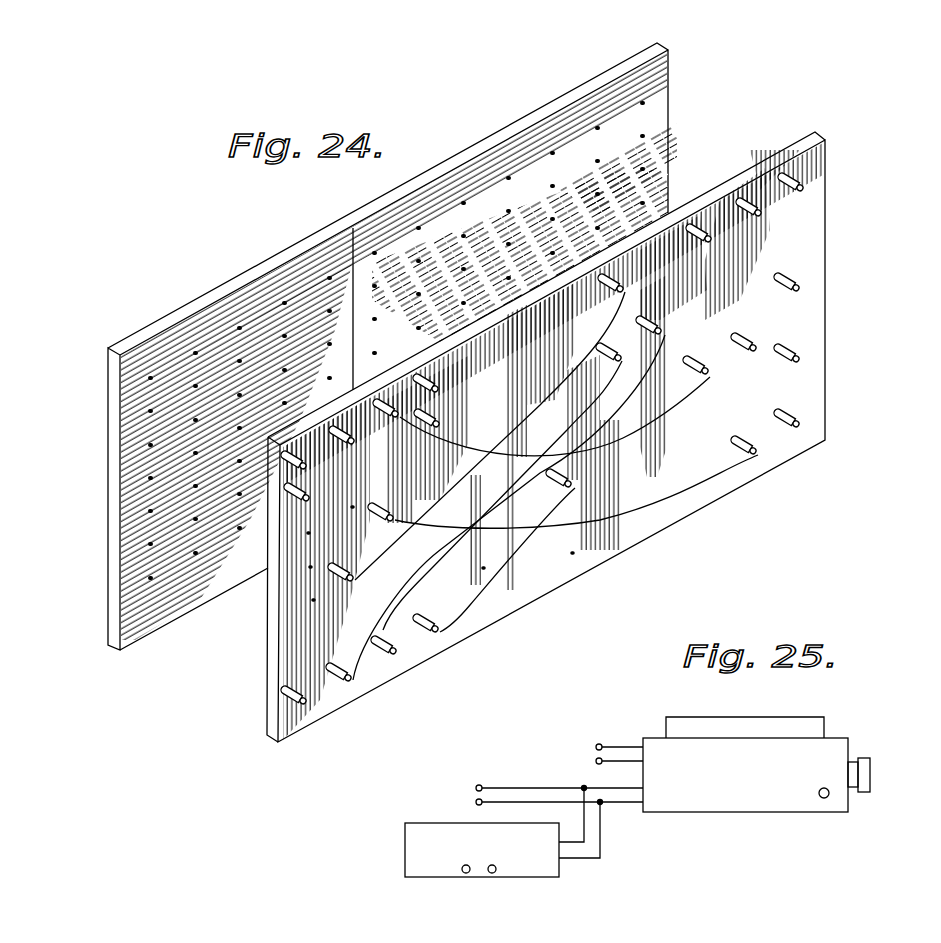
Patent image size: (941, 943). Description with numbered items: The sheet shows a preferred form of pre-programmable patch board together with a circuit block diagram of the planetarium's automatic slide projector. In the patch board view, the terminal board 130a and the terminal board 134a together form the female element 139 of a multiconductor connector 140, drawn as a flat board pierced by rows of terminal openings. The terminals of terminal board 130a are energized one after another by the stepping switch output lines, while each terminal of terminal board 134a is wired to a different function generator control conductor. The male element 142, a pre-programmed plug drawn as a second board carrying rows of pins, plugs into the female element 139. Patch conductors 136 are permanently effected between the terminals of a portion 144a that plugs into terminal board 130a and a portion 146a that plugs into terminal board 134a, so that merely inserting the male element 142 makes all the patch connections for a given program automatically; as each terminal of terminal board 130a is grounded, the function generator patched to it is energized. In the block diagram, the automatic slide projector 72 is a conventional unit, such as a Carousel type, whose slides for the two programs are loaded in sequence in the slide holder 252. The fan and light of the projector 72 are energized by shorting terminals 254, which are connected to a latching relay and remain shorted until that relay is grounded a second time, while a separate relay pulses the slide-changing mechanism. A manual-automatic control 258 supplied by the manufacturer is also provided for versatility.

In FIG. 24, the terminal board 130a is at (263, 283).
In FIG. 24, the terminal board 134a is at (508, 128).
In FIG. 24, the female element 139 is at (668, 82).
In FIG. 24, the male element 142 is at (813, 170).
In FIG. 24, the portion 146a is at (727, 488).
In FIG. 24, the patch conductors 136 is at (543, 547).
In FIG. 24, the portion 144a is at (385, 668).
In FIG. 24, the multiconductor connector 140 is at (218, 664).
In FIG. 25, the terminals 254 is at (628, 724).
In FIG. 25, the slide holder 252 is at (755, 717).
In FIG. 25, the automatic slide projector 72 is at (850, 738).
In FIG. 25, the manual-automatic control 258 is at (405, 840).